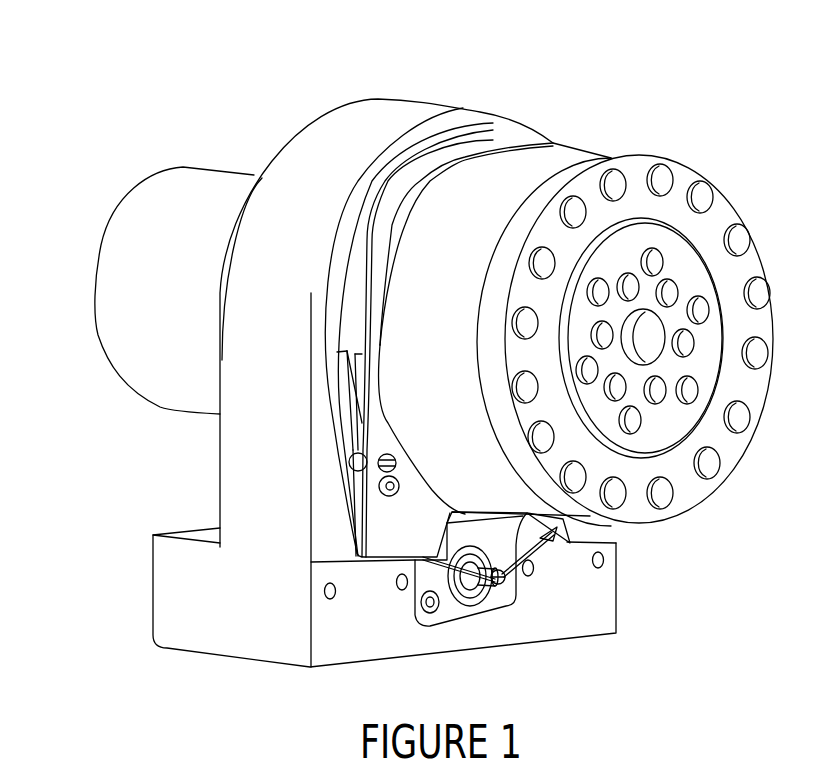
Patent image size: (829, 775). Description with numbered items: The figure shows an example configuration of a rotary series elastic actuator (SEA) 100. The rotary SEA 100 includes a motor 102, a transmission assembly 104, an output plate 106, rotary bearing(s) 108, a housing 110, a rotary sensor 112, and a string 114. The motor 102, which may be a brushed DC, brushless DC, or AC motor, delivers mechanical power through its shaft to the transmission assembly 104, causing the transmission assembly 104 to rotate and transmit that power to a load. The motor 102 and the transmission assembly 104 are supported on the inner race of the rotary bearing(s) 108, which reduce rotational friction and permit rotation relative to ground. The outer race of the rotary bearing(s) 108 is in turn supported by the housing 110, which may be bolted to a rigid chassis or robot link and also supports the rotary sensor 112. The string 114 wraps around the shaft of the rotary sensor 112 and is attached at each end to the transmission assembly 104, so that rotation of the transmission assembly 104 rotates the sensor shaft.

The rotary series elastic actuator 100 is at (662, 72).
The motor 102 is at (110, 270).
The transmission assembly 104 is at (420, 262).
The output plate 106 is at (668, 417).
The rotary bearing(s) 108 is at (318, 363).
The housing 110 is at (237, 577).
The rotary sensor 112 is at (478, 608).
The string 114 is at (542, 557).